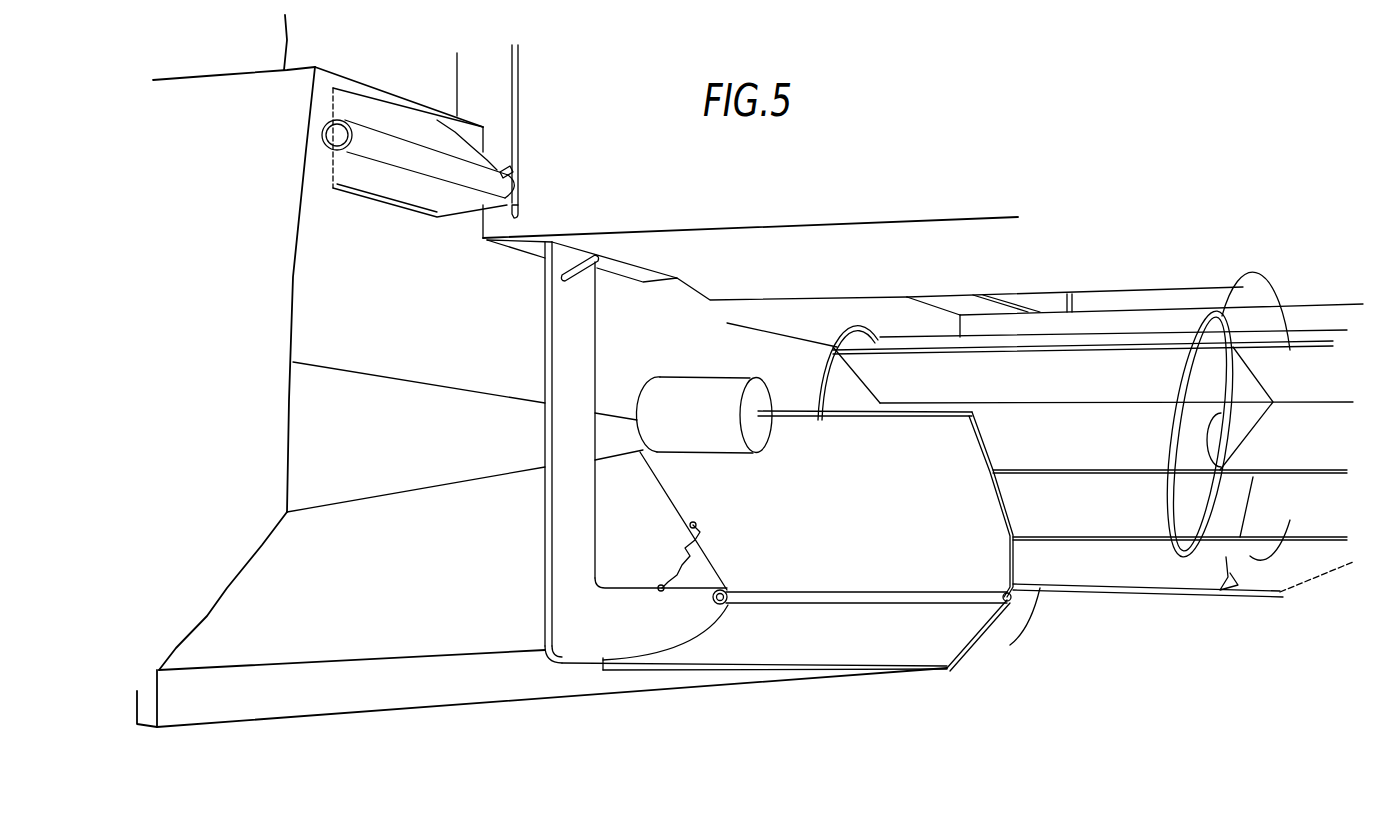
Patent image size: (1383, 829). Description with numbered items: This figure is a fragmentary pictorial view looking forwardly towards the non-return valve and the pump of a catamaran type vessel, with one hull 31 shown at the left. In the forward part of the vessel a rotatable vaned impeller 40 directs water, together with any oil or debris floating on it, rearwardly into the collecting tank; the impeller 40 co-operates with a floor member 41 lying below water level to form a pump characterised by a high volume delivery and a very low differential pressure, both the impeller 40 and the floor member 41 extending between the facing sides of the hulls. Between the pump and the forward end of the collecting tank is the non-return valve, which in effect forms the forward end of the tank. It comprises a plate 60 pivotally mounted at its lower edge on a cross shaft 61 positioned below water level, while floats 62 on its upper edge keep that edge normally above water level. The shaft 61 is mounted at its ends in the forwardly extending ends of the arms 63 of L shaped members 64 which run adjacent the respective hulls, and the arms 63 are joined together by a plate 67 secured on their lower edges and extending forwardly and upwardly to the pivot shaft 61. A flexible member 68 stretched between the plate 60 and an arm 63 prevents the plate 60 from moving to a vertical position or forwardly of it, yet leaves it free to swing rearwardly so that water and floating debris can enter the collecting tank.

The hull 31 is at (407, 323).
The rotatable vaned impeller 40 is at (1106, 454).
The floor member 41 is at (1149, 577).
The plate 60 is at (878, 534).
The cross shaft 61 is at (932, 597).
The float 62 is at (708, 430).
The arm 63 is at (671, 640).
The L shaped member 64 is at (568, 508).
The plate 67 is at (871, 647).
The flexible member 68 is at (677, 546).